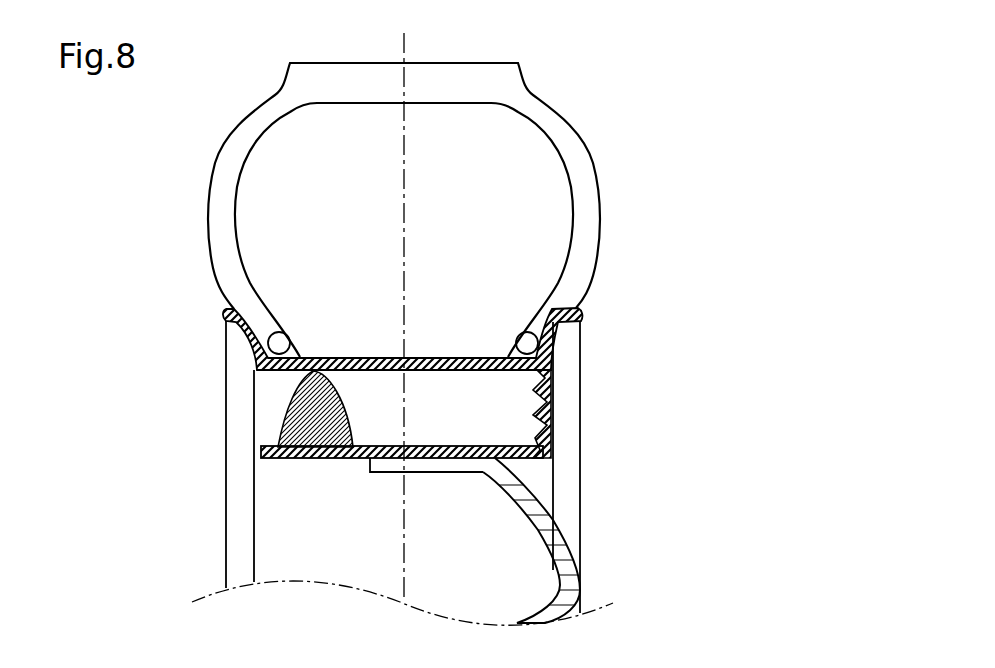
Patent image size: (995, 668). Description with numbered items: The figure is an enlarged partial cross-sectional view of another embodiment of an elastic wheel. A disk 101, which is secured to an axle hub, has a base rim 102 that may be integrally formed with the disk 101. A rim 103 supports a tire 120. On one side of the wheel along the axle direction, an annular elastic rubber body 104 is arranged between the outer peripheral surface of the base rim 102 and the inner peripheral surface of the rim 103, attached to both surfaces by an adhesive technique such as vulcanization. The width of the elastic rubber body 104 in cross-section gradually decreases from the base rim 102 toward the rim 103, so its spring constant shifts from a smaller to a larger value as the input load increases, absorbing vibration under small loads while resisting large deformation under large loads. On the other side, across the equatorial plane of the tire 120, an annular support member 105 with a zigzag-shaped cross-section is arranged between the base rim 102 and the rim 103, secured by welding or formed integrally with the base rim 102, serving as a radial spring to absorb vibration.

The tire 120 is at (580, 168).
The rim 103 is at (577, 310).
The base rim 102 is at (447, 446).
The elastic rubber body 104 is at (277, 432).
The support member 105 is at (546, 401).
The disk 101 is at (565, 572).